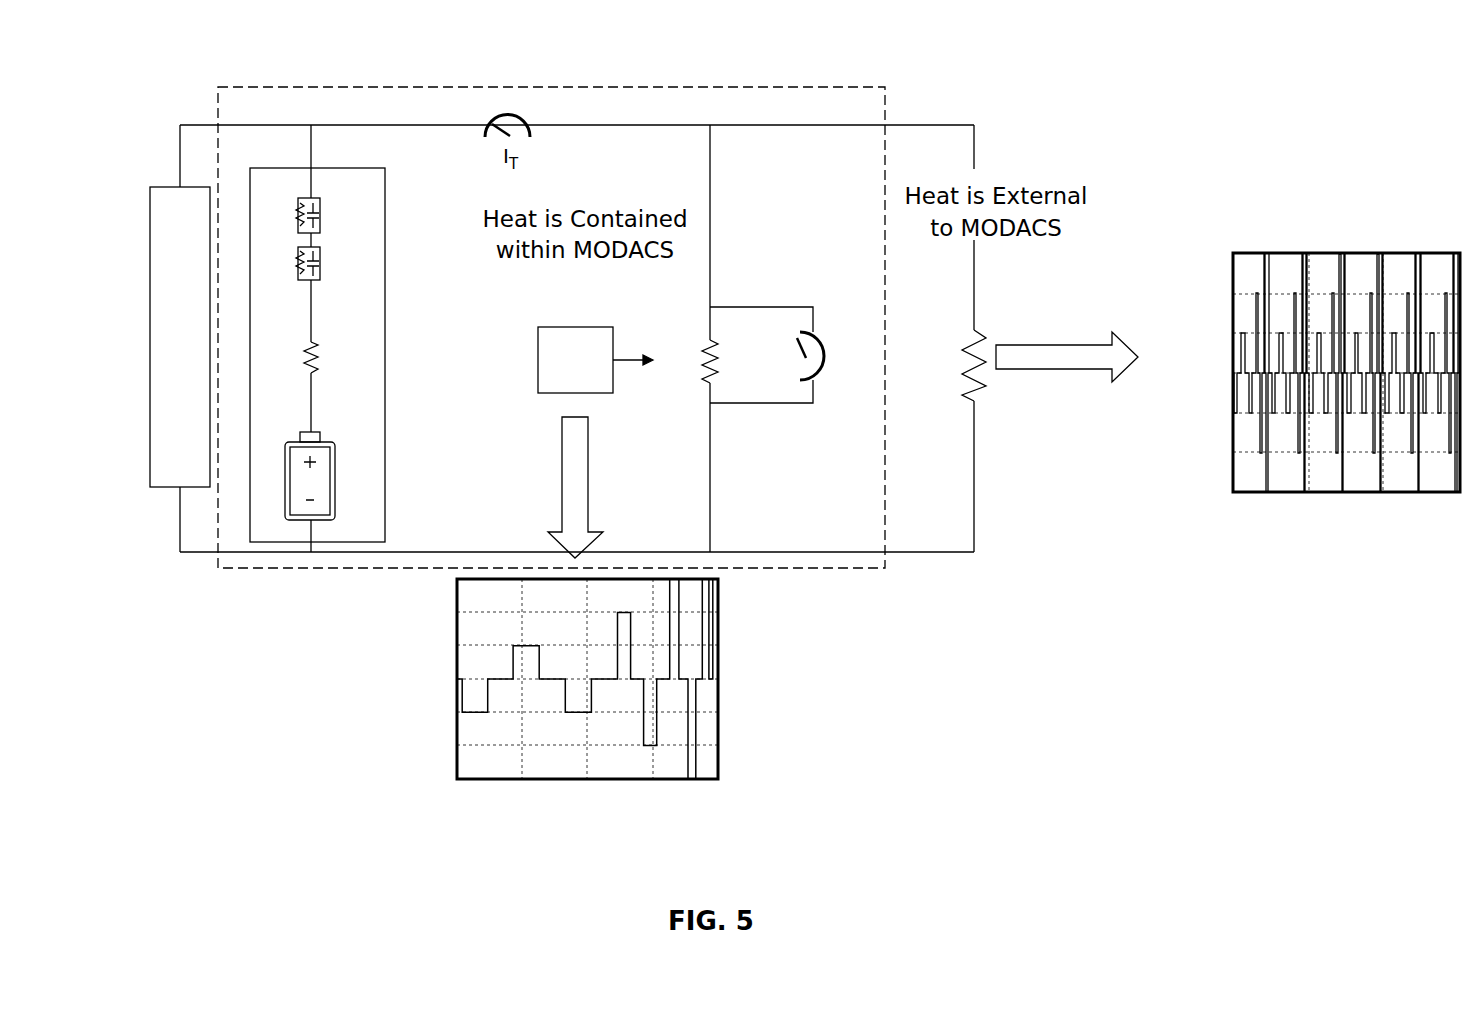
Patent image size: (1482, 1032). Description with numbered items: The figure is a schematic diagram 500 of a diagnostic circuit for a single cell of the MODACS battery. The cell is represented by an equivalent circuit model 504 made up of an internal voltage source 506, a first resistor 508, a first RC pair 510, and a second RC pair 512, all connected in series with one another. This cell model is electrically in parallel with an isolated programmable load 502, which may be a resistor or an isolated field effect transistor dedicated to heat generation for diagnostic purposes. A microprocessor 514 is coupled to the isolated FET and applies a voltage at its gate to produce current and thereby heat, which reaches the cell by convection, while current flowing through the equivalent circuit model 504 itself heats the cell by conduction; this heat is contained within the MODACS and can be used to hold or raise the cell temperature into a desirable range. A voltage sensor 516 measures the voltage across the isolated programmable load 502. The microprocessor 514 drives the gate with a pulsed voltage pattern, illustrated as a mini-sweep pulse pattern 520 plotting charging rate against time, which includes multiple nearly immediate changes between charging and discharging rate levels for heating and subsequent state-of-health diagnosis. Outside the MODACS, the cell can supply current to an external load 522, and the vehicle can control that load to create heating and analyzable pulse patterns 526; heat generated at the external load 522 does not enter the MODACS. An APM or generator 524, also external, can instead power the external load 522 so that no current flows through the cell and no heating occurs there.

The schematic diagram 500 is at (219, 50).
The isolated programmable load 502 is at (712, 345).
The equivalent circuit model 504 is at (305, 168).
The internal voltage source 506 is at (290, 458).
The first resistor 508 is at (318, 352).
The first RC pair 510 is at (320, 252).
The second RC pair 512 is at (320, 205).
The microprocessor 514 is at (568, 327).
The voltage sensor 516 is at (808, 340).
The mini-sweep pulse pattern 520 is at (712, 698).
The external load 522 is at (962, 330).
The APM or generator 524 is at (170, 187).
The analyzable pulse patterns 526 is at (1278, 253).